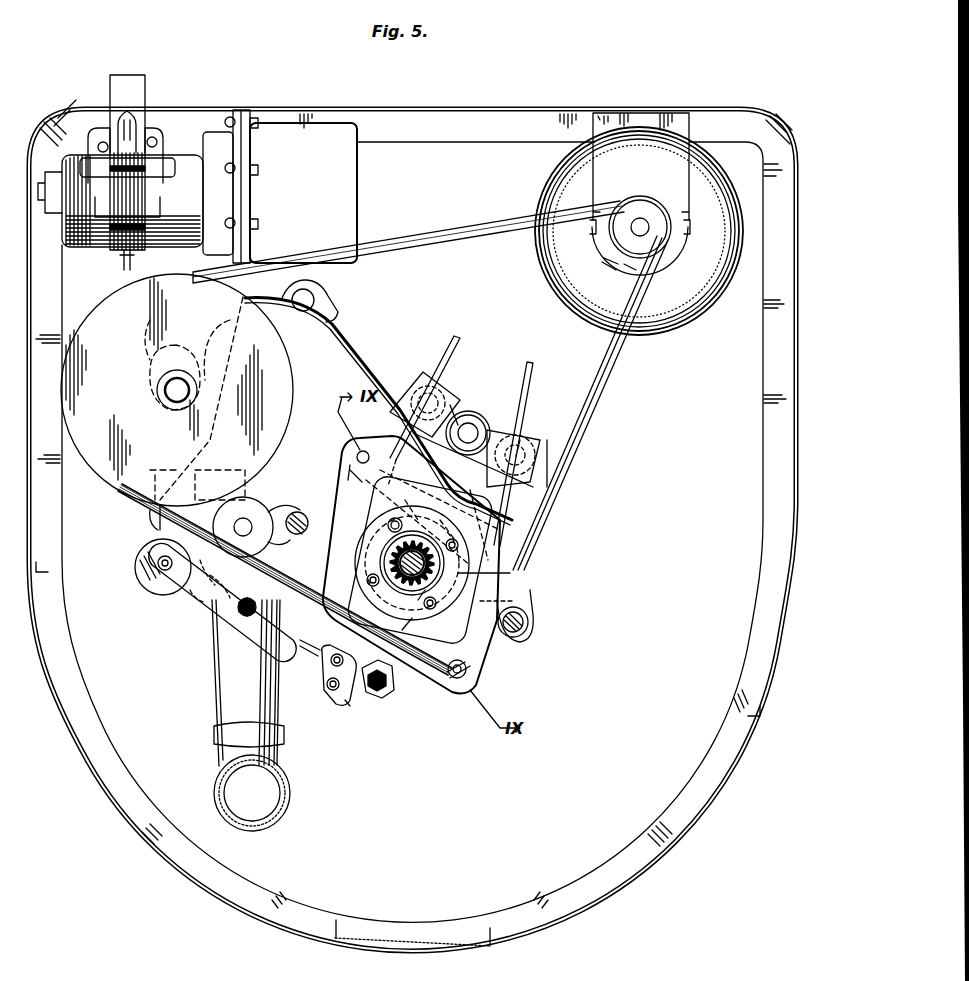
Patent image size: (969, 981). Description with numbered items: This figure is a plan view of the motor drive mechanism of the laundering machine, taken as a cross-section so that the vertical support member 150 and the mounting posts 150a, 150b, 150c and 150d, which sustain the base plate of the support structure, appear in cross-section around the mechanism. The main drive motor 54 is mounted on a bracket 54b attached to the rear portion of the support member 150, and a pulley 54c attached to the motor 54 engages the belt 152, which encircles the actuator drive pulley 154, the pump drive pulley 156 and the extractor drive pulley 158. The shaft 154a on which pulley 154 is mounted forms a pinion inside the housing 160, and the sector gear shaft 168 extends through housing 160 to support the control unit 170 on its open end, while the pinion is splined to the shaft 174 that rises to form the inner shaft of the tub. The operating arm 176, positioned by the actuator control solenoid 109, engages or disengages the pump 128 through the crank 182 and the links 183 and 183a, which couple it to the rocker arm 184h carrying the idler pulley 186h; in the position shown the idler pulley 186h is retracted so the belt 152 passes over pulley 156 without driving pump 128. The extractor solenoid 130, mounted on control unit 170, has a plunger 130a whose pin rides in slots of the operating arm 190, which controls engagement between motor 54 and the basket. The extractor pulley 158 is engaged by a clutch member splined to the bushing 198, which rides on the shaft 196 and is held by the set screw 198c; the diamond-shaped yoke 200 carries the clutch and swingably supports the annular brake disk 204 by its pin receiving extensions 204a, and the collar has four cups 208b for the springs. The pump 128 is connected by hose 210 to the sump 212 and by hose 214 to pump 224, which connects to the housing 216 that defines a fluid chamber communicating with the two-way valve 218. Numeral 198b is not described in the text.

The vertical support member 150 is at (706, 108).
The mounting post 150a is at (768, 708).
The mounting post 150b is at (432, 940).
The mounting post 150c is at (50, 668).
The mounting post 150d is at (82, 112).
The main drive motor 54 is at (732, 178).
The bracket 54b is at (602, 122).
The pulley 54c is at (646, 204).
The belt 152 is at (436, 236).
The actuator drive pulley 154 is at (104, 320).
The shaft 154a is at (166, 388).
The pump drive pulley 156 is at (228, 523).
The extractor drive pulley 158 is at (312, 620).
The housing 160 is at (346, 356).
The shaft 168 is at (472, 428).
The control unit 170 is at (422, 362).
The shaft 174 is at (417, 548).
The operating arm 176 is at (448, 350).
The crank 182 is at (378, 698).
The link 183 is at (318, 666).
The link 183a is at (349, 704).
The rocker arm 184h is at (222, 600).
The idler pulley 186h is at (154, 588).
The operating arm 190 is at (534, 380).
The shaft 196 is at (418, 596).
The bushing 198 is at (384, 546).
The plate edge 198b is at (512, 573).
The set screw 198c is at (514, 601).
The diamond-shaped yoke 200 is at (426, 664).
The annular brake disk 204 is at (420, 512).
The pin receiving extensions 204a is at (410, 622).
The cups 208b is at (470, 506).
The hose 210 is at (220, 682).
The sump 212 is at (292, 776).
The hose 214 is at (232, 362).
The housing 216 is at (360, 200).
The two-way valve 218 is at (152, 136).
The pump 224 is at (76, 238).
The pump 128 is at (150, 522).
The extractor solenoid 130 is at (540, 440).
The plunger 130a is at (528, 430).
The actuator control solenoid 109 is at (454, 396).